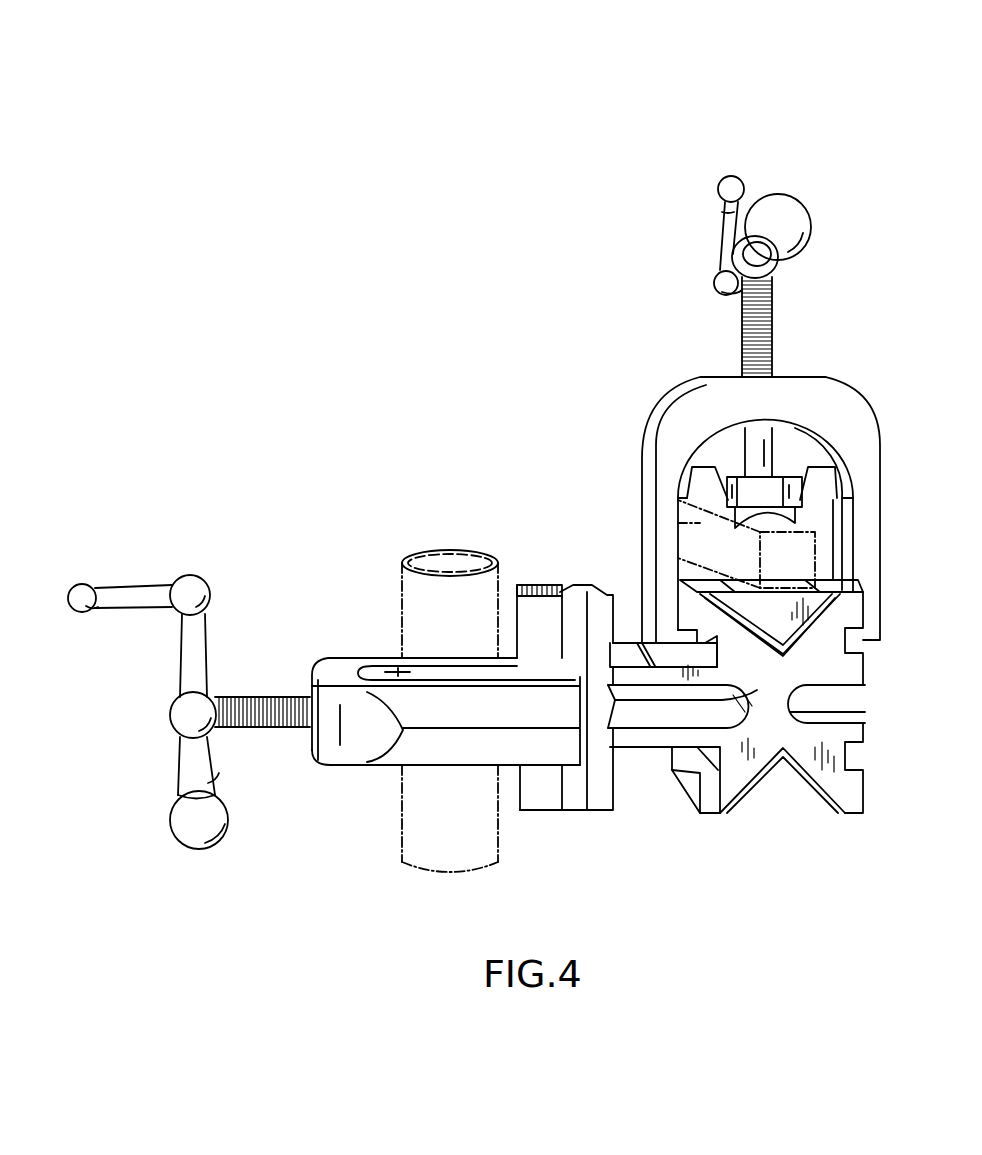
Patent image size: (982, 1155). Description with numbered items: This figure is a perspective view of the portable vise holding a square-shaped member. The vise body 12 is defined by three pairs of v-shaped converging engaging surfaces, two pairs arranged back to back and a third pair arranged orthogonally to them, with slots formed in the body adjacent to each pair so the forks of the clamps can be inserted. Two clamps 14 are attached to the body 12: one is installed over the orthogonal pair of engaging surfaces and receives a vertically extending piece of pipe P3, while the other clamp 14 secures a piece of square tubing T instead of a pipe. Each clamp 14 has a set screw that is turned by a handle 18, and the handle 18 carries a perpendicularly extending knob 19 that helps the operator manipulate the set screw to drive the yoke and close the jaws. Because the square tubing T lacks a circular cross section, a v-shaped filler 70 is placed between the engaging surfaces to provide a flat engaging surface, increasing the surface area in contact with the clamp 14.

The body 12 is at (736, 743).
The clamp 14 is at (657, 402).
The handle 18 is at (792, 177).
The knob 19 is at (723, 220).
The v-shaped filler 70 is at (797, 620).
The square tubing T is at (710, 540).
The vertically extending piece of pipe P3 is at (402, 593).